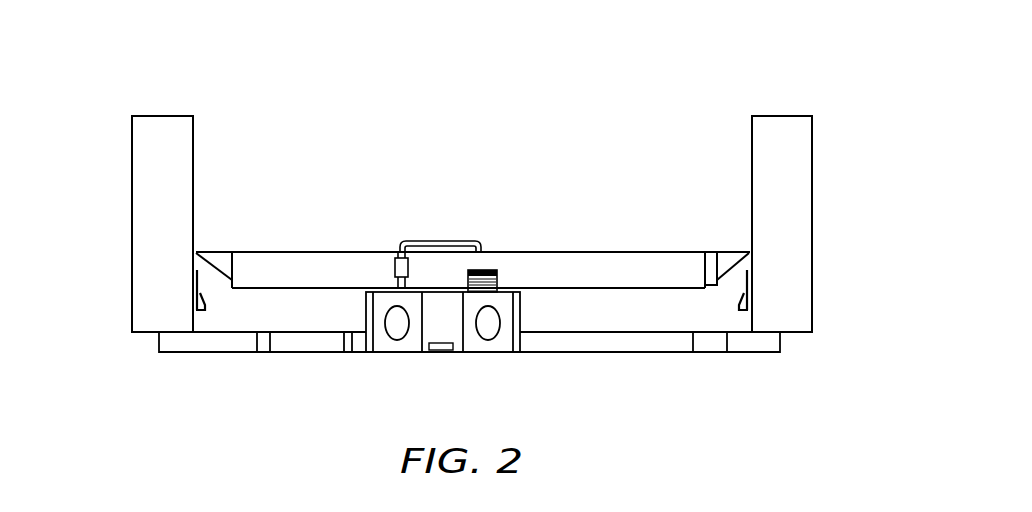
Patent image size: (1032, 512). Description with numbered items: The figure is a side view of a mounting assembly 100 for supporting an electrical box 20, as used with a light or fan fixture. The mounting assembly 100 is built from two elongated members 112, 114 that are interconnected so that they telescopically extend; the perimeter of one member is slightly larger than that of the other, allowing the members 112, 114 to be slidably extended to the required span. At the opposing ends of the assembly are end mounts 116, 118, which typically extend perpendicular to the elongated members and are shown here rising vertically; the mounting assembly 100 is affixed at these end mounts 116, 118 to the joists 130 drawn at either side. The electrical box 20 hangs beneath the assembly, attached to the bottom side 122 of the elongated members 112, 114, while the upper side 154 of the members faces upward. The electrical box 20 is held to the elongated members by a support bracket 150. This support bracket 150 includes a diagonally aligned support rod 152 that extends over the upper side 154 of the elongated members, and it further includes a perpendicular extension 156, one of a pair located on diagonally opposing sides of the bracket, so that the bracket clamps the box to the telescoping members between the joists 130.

The mounting assembly 100 is at (703, 87).
The joists 130 is at (148, 185).
The elongated member 112 is at (316, 250).
The elongated member 114 is at (597, 250).
The upper side 154 is at (281, 252).
The bottom side 122 is at (298, 289).
The support rod 152 is at (432, 240).
The perpendicular extension 156 is at (497, 275).
The electrical box 20 is at (405, 353).
The support bracket 150 is at (433, 295).
The end mount 116 is at (206, 302).
The end mount 118 is at (740, 302).